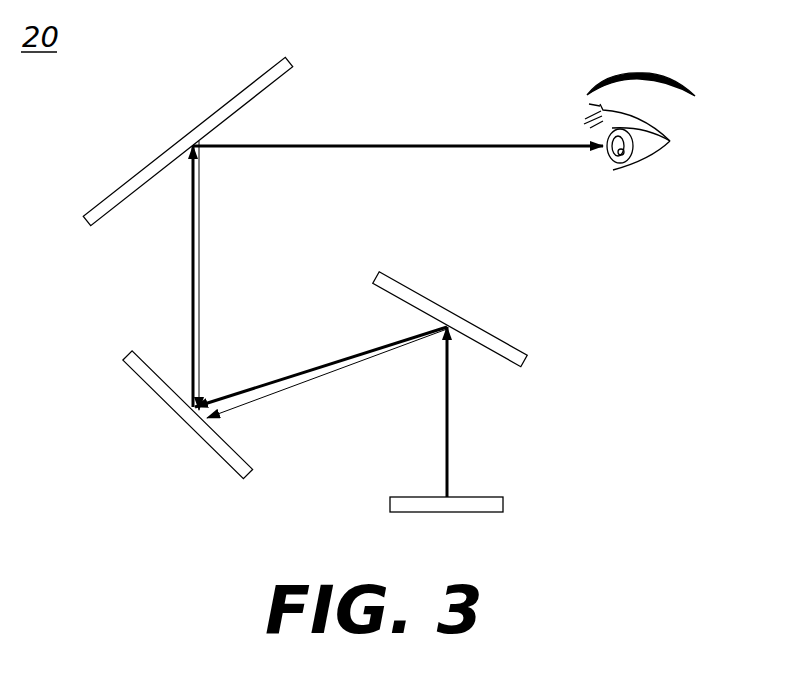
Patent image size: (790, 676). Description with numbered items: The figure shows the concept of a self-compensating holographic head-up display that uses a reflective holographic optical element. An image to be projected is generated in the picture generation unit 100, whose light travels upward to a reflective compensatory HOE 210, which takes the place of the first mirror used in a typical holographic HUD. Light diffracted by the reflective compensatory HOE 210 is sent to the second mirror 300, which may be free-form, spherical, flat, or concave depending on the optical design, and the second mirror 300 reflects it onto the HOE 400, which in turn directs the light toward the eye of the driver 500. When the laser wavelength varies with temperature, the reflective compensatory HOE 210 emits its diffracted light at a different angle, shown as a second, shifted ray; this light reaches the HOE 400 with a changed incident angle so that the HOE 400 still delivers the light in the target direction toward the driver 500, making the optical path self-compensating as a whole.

The picture generation unit 100 is at (502, 502).
The reflective compensatory HOE 210 is at (473, 330).
The second mirror 300 is at (150, 387).
The HOE 400 is at (212, 118).
The eye of observer 500 is at (670, 140).